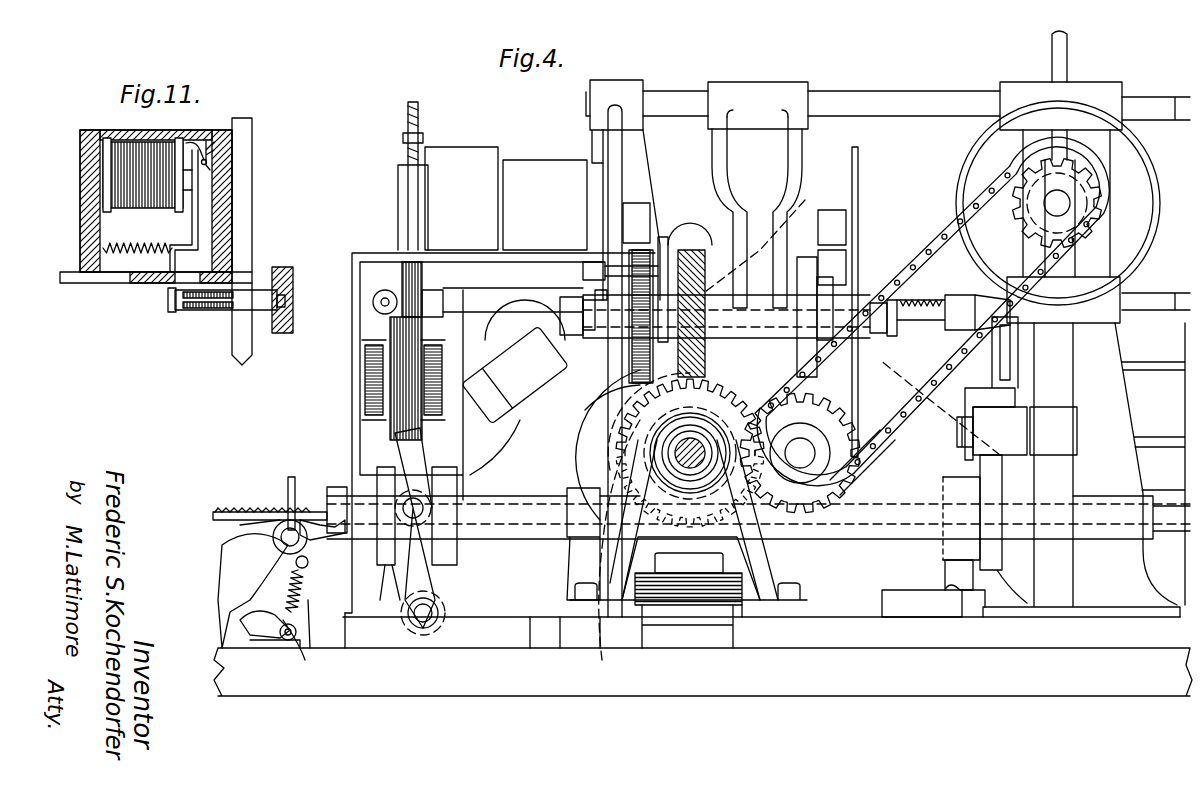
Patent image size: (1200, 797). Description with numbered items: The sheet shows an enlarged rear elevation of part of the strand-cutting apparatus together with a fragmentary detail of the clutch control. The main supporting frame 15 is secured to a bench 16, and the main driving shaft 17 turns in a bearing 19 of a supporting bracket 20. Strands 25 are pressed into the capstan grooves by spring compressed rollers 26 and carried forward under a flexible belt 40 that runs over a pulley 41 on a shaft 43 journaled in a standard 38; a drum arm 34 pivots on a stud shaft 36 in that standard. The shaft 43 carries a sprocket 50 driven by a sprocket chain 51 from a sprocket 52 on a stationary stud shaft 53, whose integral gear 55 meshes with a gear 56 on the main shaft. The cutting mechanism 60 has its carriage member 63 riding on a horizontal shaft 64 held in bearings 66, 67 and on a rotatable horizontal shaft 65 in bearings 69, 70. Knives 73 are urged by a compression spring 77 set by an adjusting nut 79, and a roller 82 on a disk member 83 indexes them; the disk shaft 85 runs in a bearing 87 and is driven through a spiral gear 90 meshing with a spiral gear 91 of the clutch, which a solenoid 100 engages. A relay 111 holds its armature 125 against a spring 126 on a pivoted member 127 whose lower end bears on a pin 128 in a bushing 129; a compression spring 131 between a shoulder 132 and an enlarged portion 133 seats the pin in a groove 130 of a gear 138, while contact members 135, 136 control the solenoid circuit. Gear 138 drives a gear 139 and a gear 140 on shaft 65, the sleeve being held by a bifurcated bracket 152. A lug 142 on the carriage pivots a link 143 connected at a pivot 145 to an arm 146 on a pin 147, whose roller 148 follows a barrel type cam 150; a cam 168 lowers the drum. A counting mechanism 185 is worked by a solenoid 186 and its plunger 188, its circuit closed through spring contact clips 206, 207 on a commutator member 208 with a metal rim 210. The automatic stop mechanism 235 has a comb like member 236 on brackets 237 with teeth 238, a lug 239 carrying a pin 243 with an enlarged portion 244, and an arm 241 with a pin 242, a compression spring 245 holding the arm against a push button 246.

In FIG. 11, the main supporting frame 15 is at (255, 258).
In FIG. 4, the main supporting frame 15 is at (552, 650).
In FIG. 4, the bench 16 is at (924, 700).
In FIG. 4, the main driving shaft 17 is at (650, 452).
In FIG. 4, the bearing 19 is at (690, 438).
In FIG. 4, the supporting bracket 20 is at (760, 550).
In FIG. 4, the strands 25 is at (990, 310).
In FIG. 4, the spring compressed rollers 26 is at (660, 240).
In FIG. 4, the arm 34 is at (962, 405).
In FIG. 4, the stud shaft 36 is at (963, 450).
In FIG. 4, the standard 38 is at (1178, 572).
In FIG. 4, the flexible belt 40 is at (1182, 97).
In FIG. 4, the pulley 41 is at (1128, 255).
In FIG. 4, the shaft 43 is at (1070, 197).
In FIG. 4, the sprocket 50 is at (918, 296).
In FIG. 4, the sprocket chain 51 is at (882, 452).
In FIG. 4, the sprocket 52 is at (855, 440).
In FIG. 4, the stationary stud shaft 53 is at (805, 470).
In FIG. 4, the gear 55 is at (860, 470).
In FIG. 4, the gear 56 is at (648, 460).
In FIG. 4, the cutting mechanism 60 is at (858, 225).
In FIG. 4, the carriage member 63 is at (780, 215).
In FIG. 4, the horizontal shaft 64 is at (905, 100).
In FIG. 4, the horizontal shaft 65 is at (468, 525).
In FIG. 4, the bearing 66 is at (622, 80).
In FIG. 4, the bearing 67 is at (1098, 90).
In FIG. 4, the bearing 69 is at (335, 487).
In FIG. 4, the bearing 70 is at (1105, 500).
In FIG. 4, the knives 73 is at (860, 162).
In FIG. 4, the compression spring 77 is at (912, 280).
In FIG. 4, the adjusting nut 79 is at (890, 335).
In FIG. 4, the roller 82 is at (840, 360).
In FIG. 4, the disk member 83 is at (825, 296).
In FIG. 4, the shaft 85 is at (590, 268).
In FIG. 4, the bearing 87 is at (820, 345).
In FIG. 4, the spiral gear 90 is at (690, 252).
In FIG. 4, the spiral gear 91 is at (640, 415).
In FIG. 4, the solenoid 100 is at (747, 622).
In FIG. 11, the relay 111 is at (150, 200).
In FIG. 4, the relay 111 is at (557, 160).
In FIG. 11, the armature 125 is at (200, 178).
In FIG. 11, the spring 126 is at (128, 258).
In FIG. 11, the pivoted member 127 is at (205, 222).
In FIG. 11, the pin 128 is at (196, 312).
In FIG. 11, the bushing 129 is at (192, 300).
In FIG. 11, the groove 130 is at (283, 312).
In FIG. 11, the compression spring 131 is at (200, 312).
In FIG. 11, the shoulder 132 is at (170, 306).
In FIG. 11, the enlarged portion 133 is at (250, 345).
In FIG. 4, the enlarged portion 133 is at (570, 300).
In FIG. 11, the contact member 135 is at (188, 142).
In FIG. 11, the contact member 136 is at (212, 158).
In FIG. 11, the gear 138 is at (286, 290).
In FIG. 4, the gear 138 is at (640, 250).
In FIG. 4, the gear 139 is at (565, 470).
In FIG. 4, the gear 140 is at (670, 549).
In FIG. 4, the lug 142 is at (795, 235).
In FIG. 4, the link 143 is at (600, 330).
In FIG. 4, the pivot 145 is at (378, 295).
In FIG. 4, the arm 146 is at (415, 445).
In FIG. 4, the pin 147 is at (420, 632).
In FIG. 4, the roller 148 is at (400, 565).
In FIG. 4, the barrel type cam 150 is at (445, 505).
In FIG. 4, the bifurcated bracket 152 is at (640, 220).
In FIG. 4, the cam 168 is at (1000, 555).
In FIG. 4, the counting mechanism 185 is at (437, 148).
In FIG. 4, the solenoid 186 is at (455, 320).
In FIG. 4, the plunger 188 is at (420, 280).
In FIG. 4, the spring contact clip 206 is at (945, 545).
In FIG. 4, the spring contact clip 207 is at (920, 595).
In FIG. 4, the commutator member 208 is at (970, 617).
In FIG. 4, the metal rim 210 is at (943, 605).
In FIG. 4, the automatic stop mechanism 235 is at (254, 536).
In FIG. 4, the comb like member 236 is at (300, 520).
In FIG. 4, the bracket 237 is at (245, 595).
In FIG. 4, the teeth 238 is at (292, 478).
In FIG. 4, the lug 239 is at (250, 532).
In FIG. 4, the arm 241 is at (295, 645).
In FIG. 4, the pin 242 is at (300, 660).
In FIG. 4, the pin 243 is at (290, 575).
In FIG. 4, the enlarged portion 244 is at (400, 590).
In FIG. 4, the compression spring 245 is at (310, 650).
In FIG. 4, the push button 246 is at (250, 630).